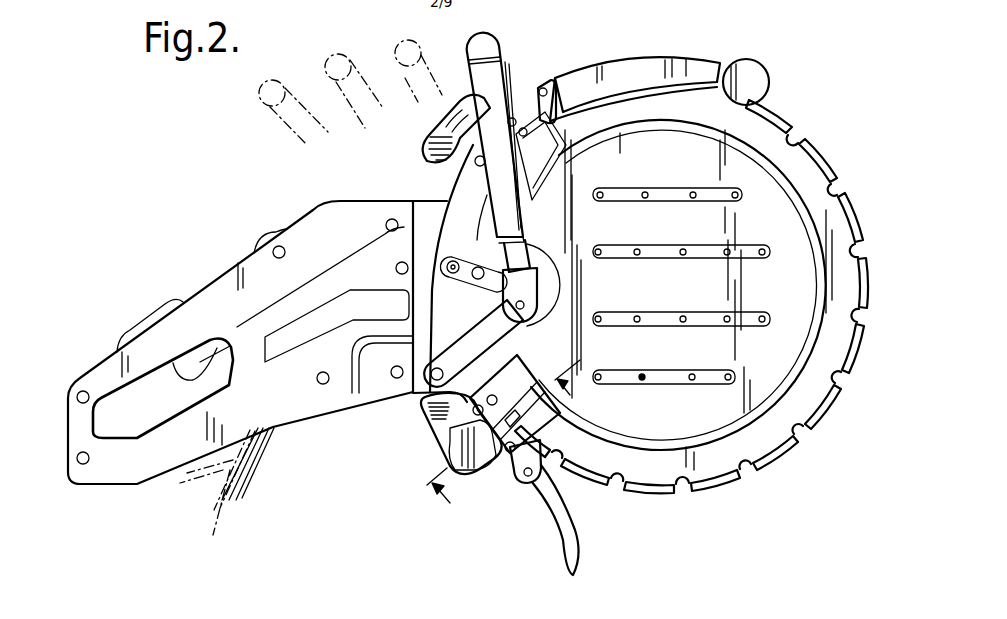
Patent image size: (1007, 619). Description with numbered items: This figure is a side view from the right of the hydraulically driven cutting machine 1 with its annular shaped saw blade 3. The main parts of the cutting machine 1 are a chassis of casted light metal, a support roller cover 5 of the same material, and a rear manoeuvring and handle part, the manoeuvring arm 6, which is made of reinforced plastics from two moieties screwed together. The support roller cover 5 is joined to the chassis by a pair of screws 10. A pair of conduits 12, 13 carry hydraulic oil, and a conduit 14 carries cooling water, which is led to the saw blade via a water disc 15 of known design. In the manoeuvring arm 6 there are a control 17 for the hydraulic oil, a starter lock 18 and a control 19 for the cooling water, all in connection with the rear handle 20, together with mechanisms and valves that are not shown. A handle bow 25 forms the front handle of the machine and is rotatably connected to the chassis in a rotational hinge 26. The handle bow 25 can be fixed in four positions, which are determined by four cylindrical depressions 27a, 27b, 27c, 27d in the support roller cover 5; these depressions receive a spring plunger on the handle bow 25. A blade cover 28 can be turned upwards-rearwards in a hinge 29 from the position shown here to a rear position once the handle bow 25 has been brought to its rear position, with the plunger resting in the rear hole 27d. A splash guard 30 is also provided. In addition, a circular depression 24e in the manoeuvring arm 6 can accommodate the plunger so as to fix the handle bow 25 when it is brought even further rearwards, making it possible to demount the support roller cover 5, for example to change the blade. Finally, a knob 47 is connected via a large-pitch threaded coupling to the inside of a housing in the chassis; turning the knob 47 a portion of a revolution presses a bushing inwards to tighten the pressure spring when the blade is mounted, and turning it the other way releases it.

The cutting machine 1 is at (468, 297).
The annular shaped saw blade 3 is at (792, 160).
The support roller cover 5 is at (467, 188).
The manoeuvring arm 6 is at (339, 202).
The screws 10 is at (477, 160).
The conduit for hydraulic oil 12 is at (253, 473).
The conduit for hydraulic oil 13 is at (220, 487).
The conduit for cooling water 14 is at (273, 430).
The water disc 15 is at (767, 373).
The control for the hydraulic oil 17 is at (193, 368).
The starter lock 18 is at (145, 322).
The control for cooling water 19 is at (270, 234).
The rear handle 20 is at (203, 317).
The circular depression 24e is at (396, 268).
The handle bow 25 is at (503, 78).
The rotational hinge 26 is at (414, 393).
The cylindrical depression 27a is at (524, 310).
The cylindrical depression 27b is at (502, 284).
The cylindrical depression 27c is at (476, 278).
The rear hole 27d is at (453, 270).
The blade cover 28 is at (697, 67).
The hinge 29 is at (543, 87).
The splash guard 30 is at (577, 548).
The knob 47 is at (433, 143).